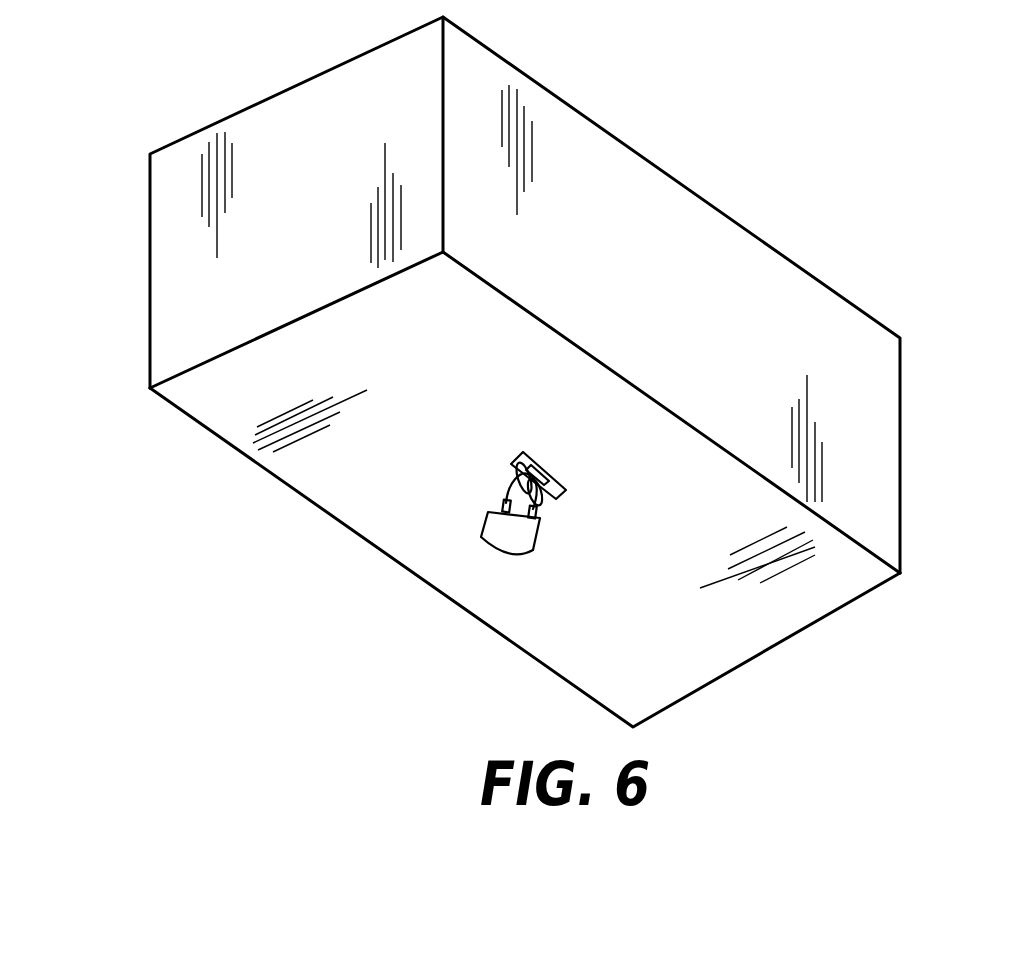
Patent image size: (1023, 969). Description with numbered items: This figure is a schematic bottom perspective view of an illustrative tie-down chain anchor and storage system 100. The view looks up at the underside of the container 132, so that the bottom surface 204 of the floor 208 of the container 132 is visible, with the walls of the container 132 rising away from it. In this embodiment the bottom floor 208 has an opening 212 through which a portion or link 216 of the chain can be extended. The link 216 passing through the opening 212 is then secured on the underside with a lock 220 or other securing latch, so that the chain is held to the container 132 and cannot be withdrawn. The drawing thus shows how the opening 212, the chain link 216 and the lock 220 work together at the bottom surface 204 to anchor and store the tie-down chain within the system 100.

The tie-down chain anchor and storage system 100 is at (571, 372).
The container 132 is at (762, 288).
The bottom surface 204 is at (571, 489).
The floor 208 is at (852, 584).
The opening 212 is at (532, 462).
The link 216 is at (513, 473).
The lock 220 is at (520, 548).